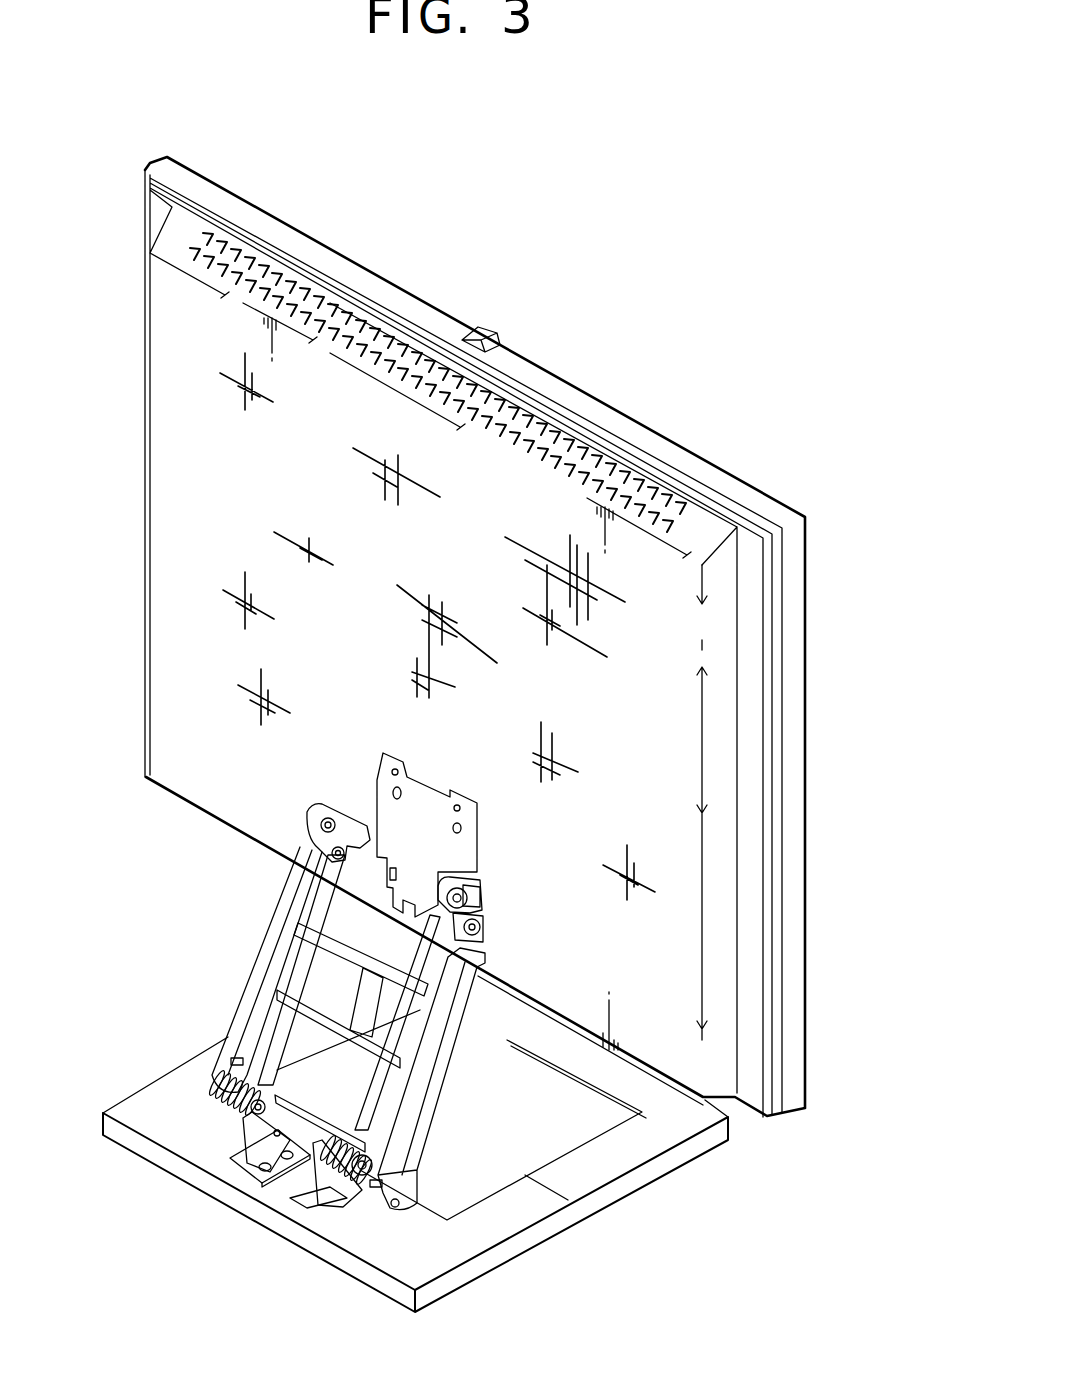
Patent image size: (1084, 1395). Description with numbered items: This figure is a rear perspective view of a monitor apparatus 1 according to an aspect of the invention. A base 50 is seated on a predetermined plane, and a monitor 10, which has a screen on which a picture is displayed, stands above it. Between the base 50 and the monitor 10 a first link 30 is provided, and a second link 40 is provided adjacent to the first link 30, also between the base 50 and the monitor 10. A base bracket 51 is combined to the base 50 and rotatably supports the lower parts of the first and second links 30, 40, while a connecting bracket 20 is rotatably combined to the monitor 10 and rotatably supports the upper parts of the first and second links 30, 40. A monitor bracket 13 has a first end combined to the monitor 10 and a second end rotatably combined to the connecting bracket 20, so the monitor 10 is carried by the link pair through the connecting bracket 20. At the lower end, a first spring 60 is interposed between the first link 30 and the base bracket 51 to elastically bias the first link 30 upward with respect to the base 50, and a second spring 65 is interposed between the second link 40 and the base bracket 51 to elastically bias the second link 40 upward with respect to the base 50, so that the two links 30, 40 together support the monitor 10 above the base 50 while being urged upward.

The monitor apparatus 1 is at (700, 263).
The monitor 10 is at (756, 1088).
The monitor bracket 13 is at (447, 837).
The connecting bracket 20 is at (322, 849).
The first link 30 is at (437, 1072).
The second link 40 is at (252, 1015).
The base 50 is at (563, 1213).
The base bracket 51 is at (290, 1187).
The first spring 60 is at (237, 1123).
The second spring 65 is at (217, 1102).